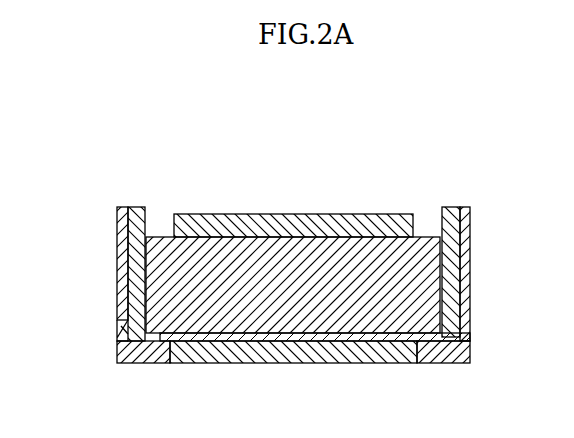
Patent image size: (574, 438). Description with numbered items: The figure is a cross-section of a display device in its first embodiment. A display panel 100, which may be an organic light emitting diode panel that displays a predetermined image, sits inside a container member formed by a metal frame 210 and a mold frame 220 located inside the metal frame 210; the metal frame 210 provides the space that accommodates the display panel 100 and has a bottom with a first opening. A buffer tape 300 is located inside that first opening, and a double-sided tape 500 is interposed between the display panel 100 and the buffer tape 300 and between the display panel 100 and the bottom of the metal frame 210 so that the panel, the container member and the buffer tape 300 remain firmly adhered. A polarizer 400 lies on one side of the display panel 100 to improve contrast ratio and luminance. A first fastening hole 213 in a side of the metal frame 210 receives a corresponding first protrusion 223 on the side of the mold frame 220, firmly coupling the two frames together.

The display panel 100 is at (445, 329).
The metal frame 210 is at (466, 287).
The first fastening hole 213 is at (115, 320).
The mold frame 220 is at (452, 250).
The first protrusion 223 is at (118, 336).
The buffer tape 300 is at (336, 363).
The polarizer 400 is at (338, 214).
The double-sided tape 500 is at (470, 341).